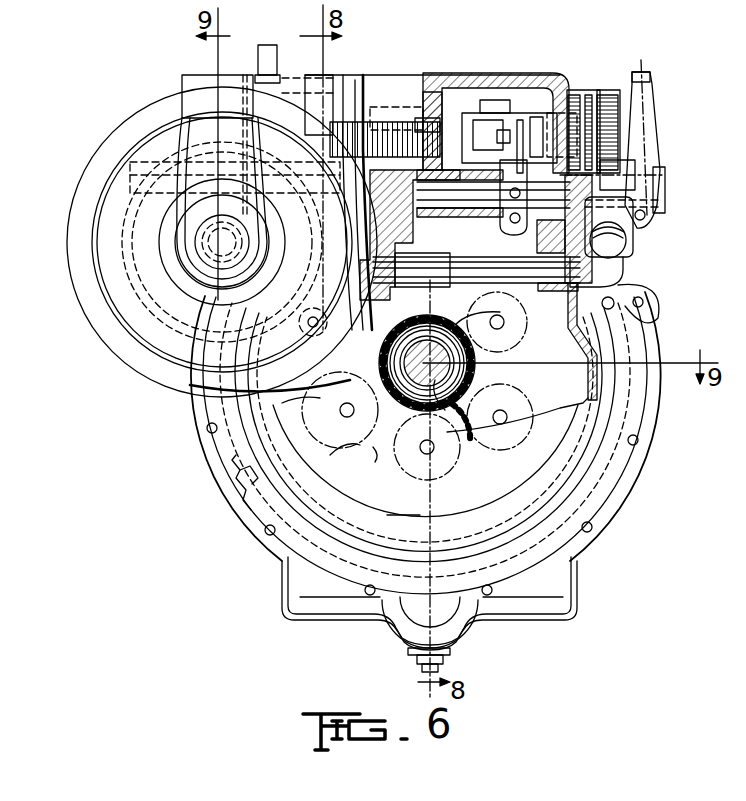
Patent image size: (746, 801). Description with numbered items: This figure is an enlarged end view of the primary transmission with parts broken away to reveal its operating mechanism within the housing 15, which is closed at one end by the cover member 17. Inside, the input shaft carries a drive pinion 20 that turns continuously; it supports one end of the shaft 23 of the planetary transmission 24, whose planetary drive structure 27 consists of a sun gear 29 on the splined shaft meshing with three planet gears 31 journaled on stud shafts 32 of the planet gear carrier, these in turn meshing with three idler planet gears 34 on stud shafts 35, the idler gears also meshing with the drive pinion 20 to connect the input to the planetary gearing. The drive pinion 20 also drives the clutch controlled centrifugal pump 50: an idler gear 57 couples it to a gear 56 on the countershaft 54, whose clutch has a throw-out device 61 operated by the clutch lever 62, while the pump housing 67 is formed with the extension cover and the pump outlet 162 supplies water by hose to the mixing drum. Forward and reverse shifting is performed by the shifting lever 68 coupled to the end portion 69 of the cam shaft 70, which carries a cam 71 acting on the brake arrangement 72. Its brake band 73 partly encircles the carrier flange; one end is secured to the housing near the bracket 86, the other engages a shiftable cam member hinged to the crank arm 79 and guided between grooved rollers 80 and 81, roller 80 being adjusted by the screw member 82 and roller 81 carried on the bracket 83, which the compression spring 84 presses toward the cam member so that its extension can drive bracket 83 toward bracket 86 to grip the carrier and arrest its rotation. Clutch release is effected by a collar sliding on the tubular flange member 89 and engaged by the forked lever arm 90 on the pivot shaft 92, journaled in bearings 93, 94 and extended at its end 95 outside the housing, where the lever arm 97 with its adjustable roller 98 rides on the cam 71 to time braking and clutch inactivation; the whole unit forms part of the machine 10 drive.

The housing 10 is at (212, 472).
The housing 15 is at (636, 470).
The cover member 17 is at (602, 433).
The drive pinion 20 is at (448, 430).
The shaft 23 is at (472, 352).
The planetary transmission 24 is at (473, 457).
The planetary drive structure 27 is at (485, 371).
The sun gear 29 is at (359, 462).
The planet gears 31 is at (307, 337).
The stud shafts 32 is at (505, 322).
The idler planet gears 34 is at (537, 457).
The stud shafts 35 is at (502, 427).
The centrifugal pump 50 is at (120, 361).
The countershaft 54 is at (200, 247).
The gear 56 is at (160, 290).
The idler gear 57 is at (282, 403).
The throw-out device 61 is at (188, 163).
The clutch lever 62 is at (262, 78).
The housing 67 is at (73, 298).
The shifting lever 68 is at (643, 140).
The end portion 69 is at (662, 200).
The cam shaft 70 is at (445, 195).
The cam 71 is at (615, 170).
The brake arrangement 72 is at (597, 528).
The brake band 73 is at (391, 506).
The crank arm 79 is at (527, 137).
The grooved roller 80 is at (487, 133).
The grooved roller 81 is at (518, 187).
The screw member 82 is at (618, 118).
The bracket 83 is at (470, 127).
The compression spring 84 is at (427, 125).
The bracket 86 is at (298, 130).
The tubular flange member 89 is at (447, 366).
The forked lever arm 90 is at (497, 317).
The pivot shaft 92 is at (498, 267).
The bearing 93 is at (545, 270).
The bearing 94 is at (255, 242).
The end 95 is at (652, 312).
The lever arm 97 is at (623, 233).
The roller 98 is at (612, 188).
The outlet 162 is at (343, 103).